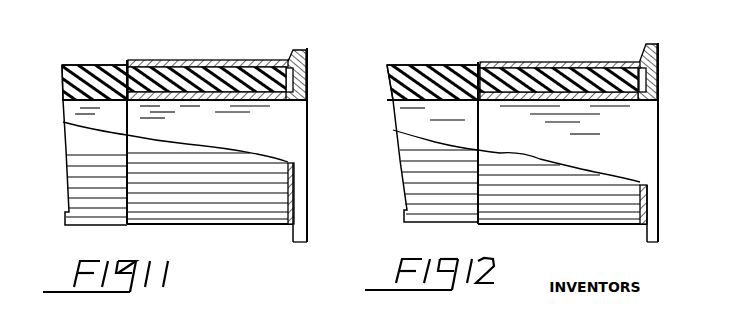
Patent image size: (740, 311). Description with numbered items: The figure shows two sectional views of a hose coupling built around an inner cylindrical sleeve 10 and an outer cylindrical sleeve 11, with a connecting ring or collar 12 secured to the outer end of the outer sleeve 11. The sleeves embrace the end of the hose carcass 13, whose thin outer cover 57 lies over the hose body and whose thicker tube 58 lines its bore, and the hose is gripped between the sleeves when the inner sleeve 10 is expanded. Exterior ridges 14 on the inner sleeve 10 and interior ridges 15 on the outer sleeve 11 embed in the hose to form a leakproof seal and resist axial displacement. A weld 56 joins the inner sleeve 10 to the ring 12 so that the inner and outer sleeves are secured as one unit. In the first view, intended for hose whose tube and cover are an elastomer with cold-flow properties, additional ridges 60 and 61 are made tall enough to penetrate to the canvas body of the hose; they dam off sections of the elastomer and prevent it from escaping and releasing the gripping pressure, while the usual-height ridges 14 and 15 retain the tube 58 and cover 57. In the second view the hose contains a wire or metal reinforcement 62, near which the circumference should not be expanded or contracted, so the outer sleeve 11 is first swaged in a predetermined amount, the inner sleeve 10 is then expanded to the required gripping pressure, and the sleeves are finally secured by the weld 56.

In FIG. 11, the inner cylindrical sleeve 10 is at (208, 101).
In FIG. 12, the inner cylindrical sleeve 10 is at (570, 102).
In FIG. 11, the outer cylindrical sleeve 11 is at (197, 68).
In FIG. 12, the outer cylindrical sleeve 11 is at (553, 66).
In FIG. 11, the connecting ring or collar 12 is at (305, 49).
In FIG. 12, the connecting ring or collar 12 is at (652, 44).
In FIG. 11, the hose carcass 13 is at (78, 65).
In FIG. 12, the hose carcass 13 is at (436, 65).
In FIG. 11, the exterior circumferential ridges 14 is at (176, 102).
In FIG. 12, the exterior circumferential ridges 14 is at (605, 102).
In FIG. 11, the interior circumferential ridges 15 is at (170, 60).
In FIG. 12, the interior circumferential ridges 15 is at (580, 62).
In FIG. 11, the weld 56 is at (308, 96).
In FIG. 12, the weld 56 is at (658, 95).
In FIG. 11, the outer cover 57 is at (108, 64).
In FIG. 12, the outer cover 57 is at (452, 79).
In FIG. 11, the tube 58 is at (102, 100).
In FIG. 12, the tube 58 is at (453, 100).
In FIG. 11, the ridge 60 is at (236, 101).
In FIG. 11, the ridge 61 is at (225, 68).
In FIG. 12, the reinforcement 62 is at (483, 67).